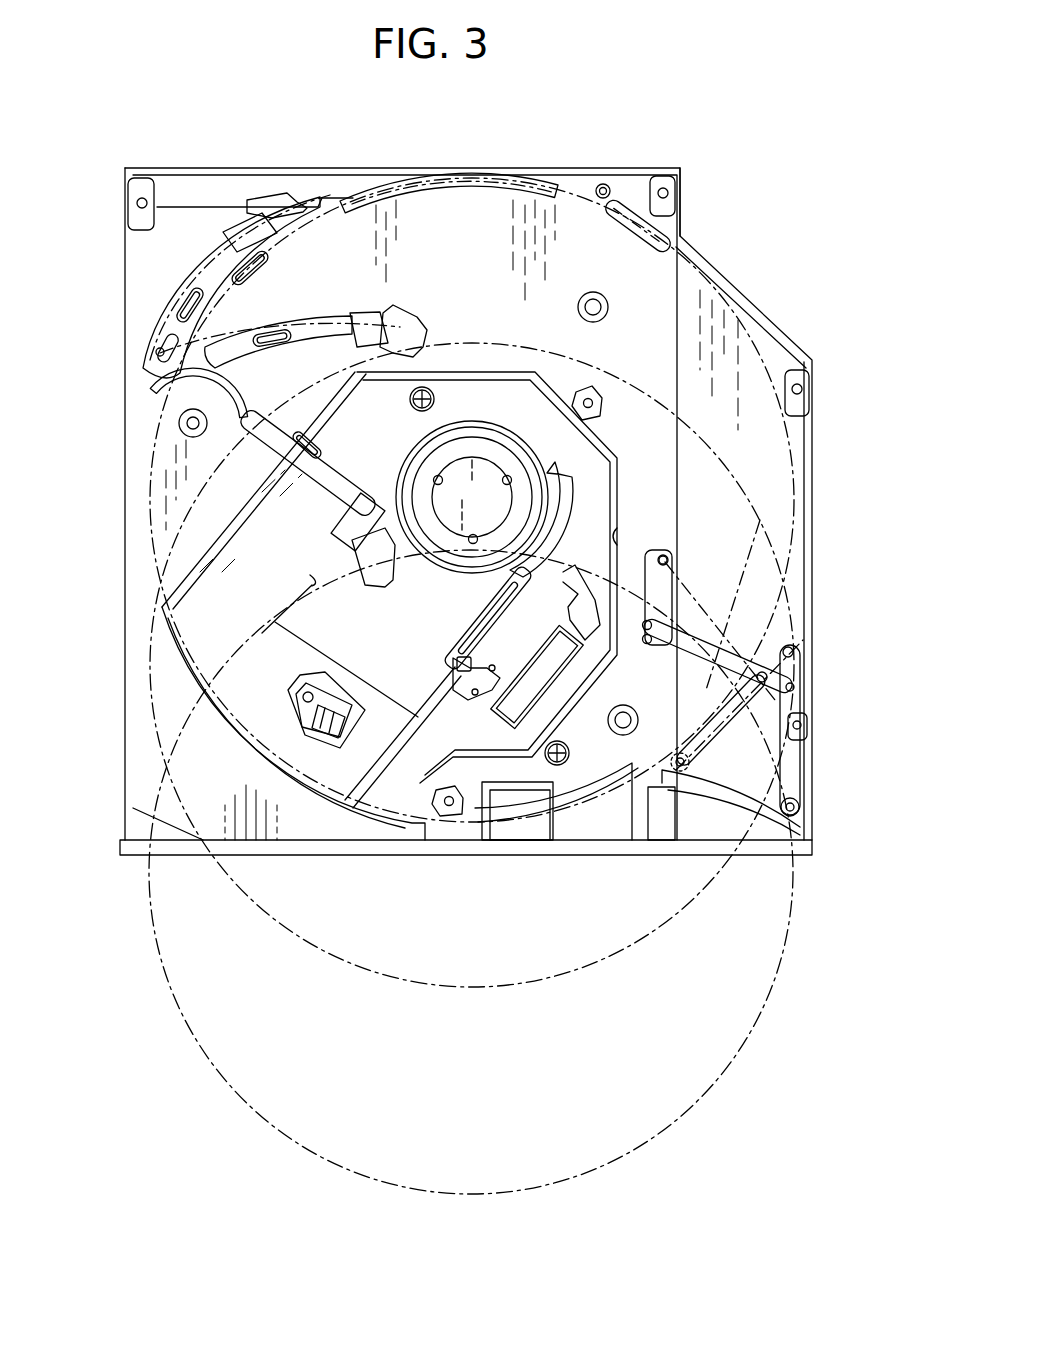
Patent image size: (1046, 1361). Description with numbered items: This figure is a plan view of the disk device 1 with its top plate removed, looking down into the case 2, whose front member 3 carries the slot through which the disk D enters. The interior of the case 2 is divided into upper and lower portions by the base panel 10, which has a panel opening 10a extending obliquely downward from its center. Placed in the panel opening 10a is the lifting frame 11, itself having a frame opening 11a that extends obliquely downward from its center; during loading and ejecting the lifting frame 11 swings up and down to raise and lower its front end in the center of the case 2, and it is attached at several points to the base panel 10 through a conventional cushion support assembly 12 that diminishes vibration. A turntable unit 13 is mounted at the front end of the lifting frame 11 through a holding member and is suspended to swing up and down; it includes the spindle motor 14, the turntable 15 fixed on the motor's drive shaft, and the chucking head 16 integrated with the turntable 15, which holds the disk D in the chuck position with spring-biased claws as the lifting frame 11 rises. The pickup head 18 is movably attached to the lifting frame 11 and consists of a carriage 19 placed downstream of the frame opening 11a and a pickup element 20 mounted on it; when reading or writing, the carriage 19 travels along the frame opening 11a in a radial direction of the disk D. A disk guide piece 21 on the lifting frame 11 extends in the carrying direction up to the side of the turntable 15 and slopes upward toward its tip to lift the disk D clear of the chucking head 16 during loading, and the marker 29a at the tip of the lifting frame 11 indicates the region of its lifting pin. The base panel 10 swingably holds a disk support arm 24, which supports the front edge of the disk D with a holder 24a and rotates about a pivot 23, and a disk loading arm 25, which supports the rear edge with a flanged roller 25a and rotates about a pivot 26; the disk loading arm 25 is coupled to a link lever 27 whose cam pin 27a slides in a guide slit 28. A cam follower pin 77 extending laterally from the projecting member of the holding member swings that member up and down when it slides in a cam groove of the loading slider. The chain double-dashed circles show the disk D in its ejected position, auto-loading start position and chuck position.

The optical disc drive 1 is at (720, 246).
The case 2 is at (810, 558).
The bottom plate of the main frame 3 is at (330, 855).
The base panel 10 is at (460, 200).
The panel opening 10a is at (618, 530).
The lifting frame 11 is at (590, 470).
The frame opening 11a is at (312, 583).
The cushion support assembly 12 is at (590, 402).
The turntable unit 13 is at (462, 378).
The spindle motor 14 is at (490, 448).
The turntable 15 is at (485, 455).
The chucking head 16 is at (487, 477).
The pickup head 18 is at (308, 670).
The carriage 19 is at (393, 704).
The pickup element 20 is at (320, 690).
The disk guide piece 21 is at (467, 628).
The pivot 23 is at (180, 423).
The disk support arm 24 is at (222, 262).
The holder 24a is at (352, 535).
The disk loading arm 25 is at (727, 735).
The flanged roller 25a is at (686, 766).
The pivot 26 is at (790, 650).
The link lever 27 is at (723, 650).
The cam pin 27a is at (668, 560).
The guide slit 28 is at (655, 552).
The loading direction of disc 29a is at (448, 418).
The cam follower pin 77 is at (610, 563).
The disk D is at (753, 341).